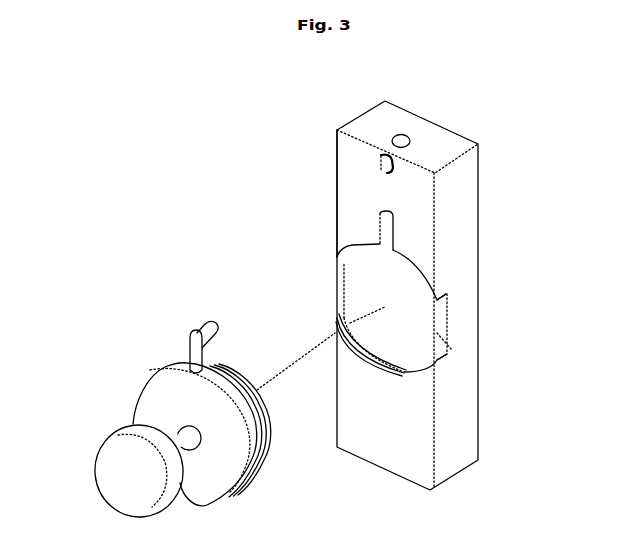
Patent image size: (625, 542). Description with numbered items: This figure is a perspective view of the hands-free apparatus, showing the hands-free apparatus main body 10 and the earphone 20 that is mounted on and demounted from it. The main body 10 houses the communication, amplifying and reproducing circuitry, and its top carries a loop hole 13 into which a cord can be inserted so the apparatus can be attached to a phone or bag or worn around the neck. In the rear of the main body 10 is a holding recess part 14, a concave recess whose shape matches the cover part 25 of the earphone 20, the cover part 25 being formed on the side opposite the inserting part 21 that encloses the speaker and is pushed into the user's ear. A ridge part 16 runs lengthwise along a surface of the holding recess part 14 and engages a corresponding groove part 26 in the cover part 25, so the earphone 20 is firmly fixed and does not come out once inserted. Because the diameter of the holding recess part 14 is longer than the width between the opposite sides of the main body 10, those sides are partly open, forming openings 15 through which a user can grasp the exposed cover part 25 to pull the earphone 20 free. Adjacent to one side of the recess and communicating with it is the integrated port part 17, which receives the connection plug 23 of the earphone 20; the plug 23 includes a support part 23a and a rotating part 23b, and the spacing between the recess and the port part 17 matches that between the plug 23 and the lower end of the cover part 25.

The hands-free apparatus main body 10 is at (455, 110).
The loop hole 13 is at (387, 167).
The holding recess part 14 is at (447, 350).
The openings 15 is at (337, 280).
The ridge part 16 is at (336, 318).
The integrated port part 17 is at (378, 222).
The earphone 20 is at (182, 398).
The inserting part 21 is at (115, 483).
The connection plug 23 is at (203, 324).
The support part 23a is at (187, 352).
The rotating part 23b is at (218, 335).
The cover part 25 is at (270, 463).
The groove part 26 is at (264, 423).